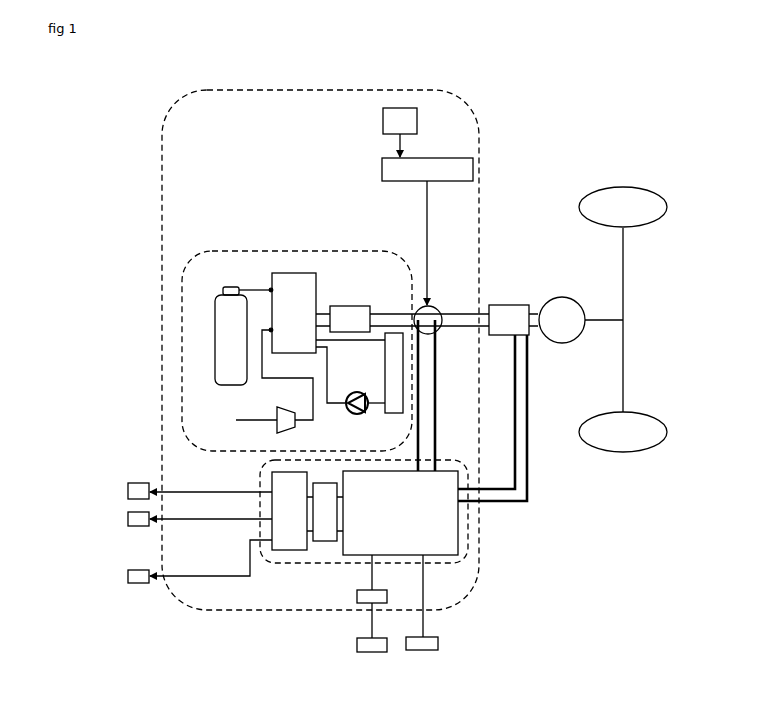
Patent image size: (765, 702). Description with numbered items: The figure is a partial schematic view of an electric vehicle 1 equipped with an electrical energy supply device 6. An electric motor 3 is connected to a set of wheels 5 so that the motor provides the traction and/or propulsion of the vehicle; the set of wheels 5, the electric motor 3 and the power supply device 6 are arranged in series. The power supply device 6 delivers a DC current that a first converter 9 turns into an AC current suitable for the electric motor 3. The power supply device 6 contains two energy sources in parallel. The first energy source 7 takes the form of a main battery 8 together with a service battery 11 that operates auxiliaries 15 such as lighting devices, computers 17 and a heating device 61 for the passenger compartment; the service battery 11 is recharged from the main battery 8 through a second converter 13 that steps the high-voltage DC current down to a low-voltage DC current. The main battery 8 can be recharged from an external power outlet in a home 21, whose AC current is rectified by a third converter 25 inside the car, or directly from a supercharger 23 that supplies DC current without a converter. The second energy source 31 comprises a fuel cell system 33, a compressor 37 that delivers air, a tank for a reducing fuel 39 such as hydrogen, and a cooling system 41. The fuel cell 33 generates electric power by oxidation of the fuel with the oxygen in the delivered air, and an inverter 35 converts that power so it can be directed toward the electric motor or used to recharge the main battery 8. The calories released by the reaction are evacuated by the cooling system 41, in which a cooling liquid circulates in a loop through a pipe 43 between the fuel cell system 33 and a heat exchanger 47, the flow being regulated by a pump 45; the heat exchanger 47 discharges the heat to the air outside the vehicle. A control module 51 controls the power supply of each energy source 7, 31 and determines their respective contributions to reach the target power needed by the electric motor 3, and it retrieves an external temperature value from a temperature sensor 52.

The electric vehicle 1 is at (580, 104).
The electric motor 3 is at (562, 298).
The set of wheels 5 is at (623, 388).
The electrical energy supply device 6 is at (162, 147).
The first energy source 7 is at (462, 560).
The main battery 8 is at (400, 513).
The first converter 9 is at (518, 305).
The service battery 11 is at (289, 511).
The second converter 13 is at (325, 512).
The auxiliaries 15 is at (128, 492).
The computers 17 is at (128, 519).
The power outlet in a home 21 is at (365, 652).
The supercharger 23 is at (420, 650).
The third converter 25 is at (357, 597).
The second energy source 31 is at (195, 253).
The fuel cell system 33 is at (286, 273).
The inverter 35 is at (353, 306).
The compressor 37 is at (296, 428).
The tank for a reducing fuel 39 is at (228, 337).
The cooling system 41 is at (372, 417).
The pipe 43 is at (327, 405).
The pump 45 is at (360, 392).
The heat exchanger 47 is at (394, 402).
The control module 51 is at (382, 165).
The temperature sensor 52 is at (383, 110).
The heating device 61 is at (128, 577).